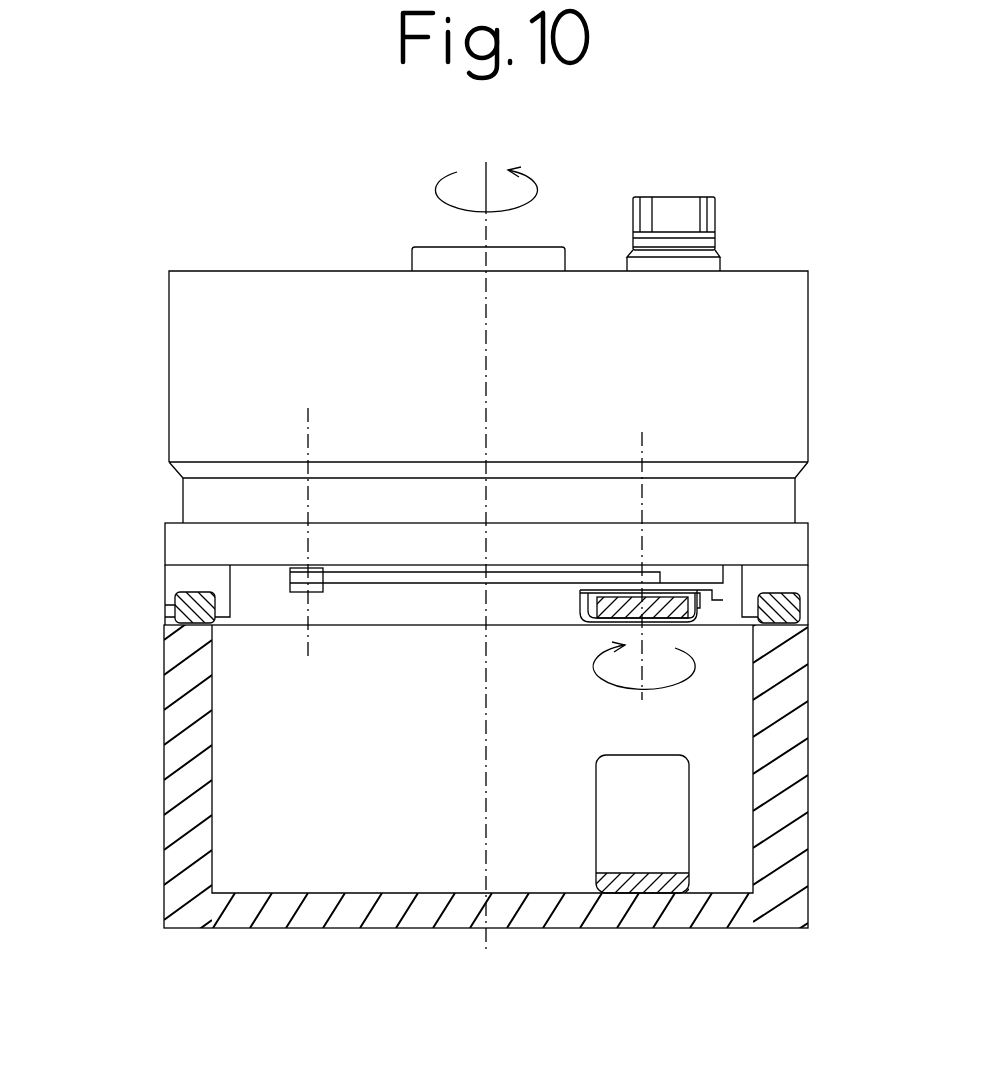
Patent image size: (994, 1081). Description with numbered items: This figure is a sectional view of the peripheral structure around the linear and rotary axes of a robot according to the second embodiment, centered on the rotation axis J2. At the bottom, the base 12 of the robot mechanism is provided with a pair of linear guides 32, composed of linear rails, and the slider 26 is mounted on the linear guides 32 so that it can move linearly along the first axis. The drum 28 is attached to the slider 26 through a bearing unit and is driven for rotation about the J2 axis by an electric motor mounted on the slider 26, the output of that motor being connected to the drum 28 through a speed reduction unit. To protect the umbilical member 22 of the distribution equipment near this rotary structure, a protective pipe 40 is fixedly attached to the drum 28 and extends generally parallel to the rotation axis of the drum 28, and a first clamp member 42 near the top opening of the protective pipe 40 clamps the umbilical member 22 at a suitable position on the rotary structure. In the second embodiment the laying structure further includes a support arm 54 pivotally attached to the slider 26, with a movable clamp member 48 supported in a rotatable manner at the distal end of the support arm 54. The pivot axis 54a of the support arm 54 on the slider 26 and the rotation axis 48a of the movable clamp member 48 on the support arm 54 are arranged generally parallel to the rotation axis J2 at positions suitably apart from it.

The base 12 is at (164, 872).
The umbilical member 22 is at (676, 619).
The slider 26 is at (177, 552).
The drum 28 is at (169, 300).
The linear guides 32 is at (175, 610).
The protective pipe 40 is at (712, 265).
The first clamp member 42 is at (710, 218).
The movable clamp member 48 is at (580, 612).
The rotation axis 48a is at (642, 440).
The support arm 54 is at (387, 587).
The pivot axis 54a is at (308, 430).
The J2 axis J2 is at (486, 536).